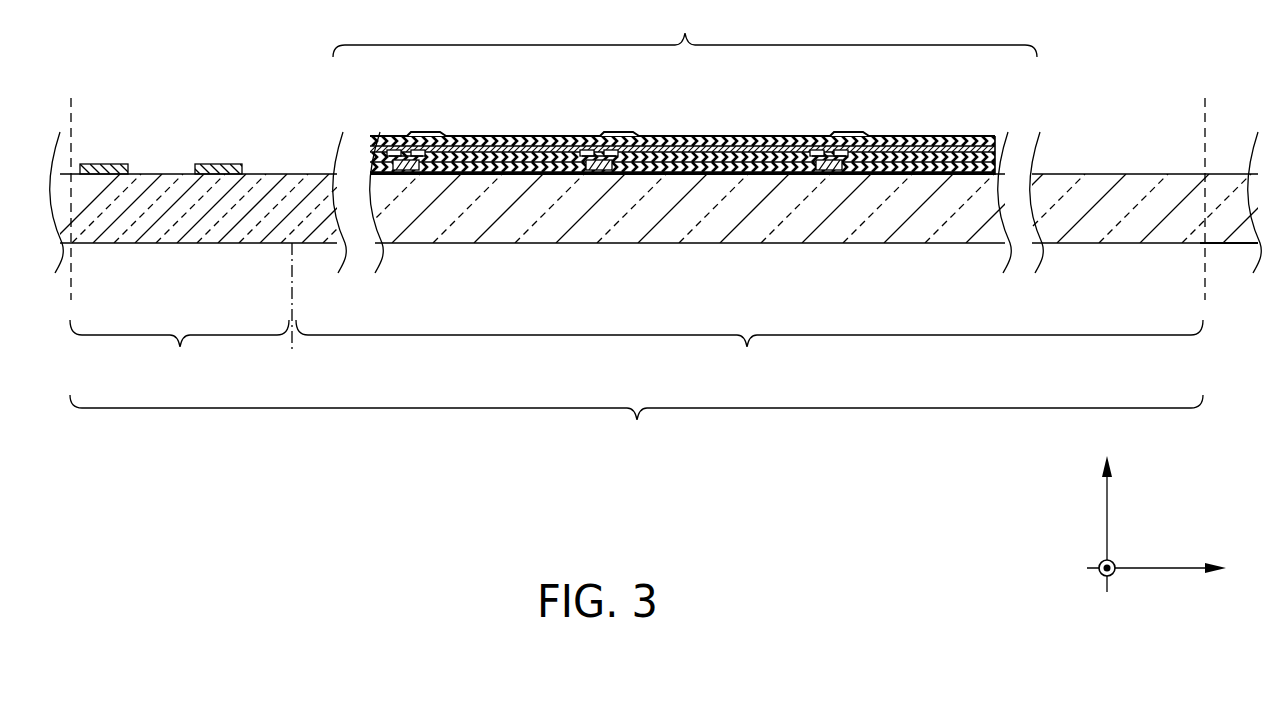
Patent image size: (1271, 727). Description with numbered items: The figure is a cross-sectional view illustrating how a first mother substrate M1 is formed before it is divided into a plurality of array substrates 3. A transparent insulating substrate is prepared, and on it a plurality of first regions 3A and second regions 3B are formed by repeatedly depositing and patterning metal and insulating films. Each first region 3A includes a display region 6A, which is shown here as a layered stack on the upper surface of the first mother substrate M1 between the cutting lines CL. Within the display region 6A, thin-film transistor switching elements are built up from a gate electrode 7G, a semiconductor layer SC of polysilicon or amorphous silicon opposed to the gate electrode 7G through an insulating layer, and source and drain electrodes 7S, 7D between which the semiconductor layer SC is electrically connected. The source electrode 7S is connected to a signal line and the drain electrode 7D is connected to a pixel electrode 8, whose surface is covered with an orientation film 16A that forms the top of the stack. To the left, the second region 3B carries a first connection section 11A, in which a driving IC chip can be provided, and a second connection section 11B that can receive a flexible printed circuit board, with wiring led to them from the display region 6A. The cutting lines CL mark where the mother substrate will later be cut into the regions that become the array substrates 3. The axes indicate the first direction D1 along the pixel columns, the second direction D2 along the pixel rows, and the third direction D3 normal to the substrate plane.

The array substrate 3 is at (656, 295).
The first region 3A is at (783, 279).
The second region 3B is at (221, 279).
The display region 6A is at (685, 70).
The source electrode 7S is at (398, 158).
The drain electrode 7D is at (422, 150).
The gate electrode 7G is at (407, 173).
The semiconductor layer SC is at (398, 175).
The pixel electrode 8 is at (478, 142).
The orientation film 16A is at (968, 137).
The first connection section 11A is at (222, 164).
The second connection section 11B is at (113, 164).
The cutting line CL is at (639, 184).
The first mother substrate M1 is at (1224, 256).
The first direction D1 is at (1158, 584).
The second direction D2 is at (1115, 561).
The third direction D3 is at (1122, 519).